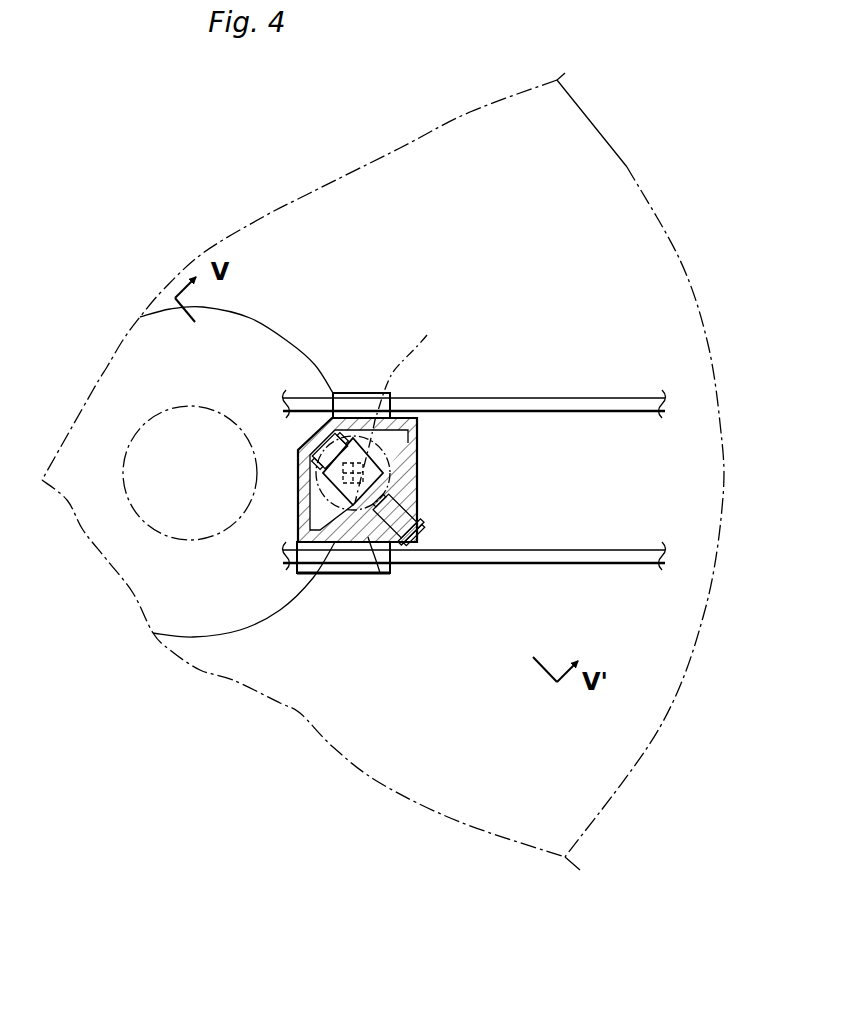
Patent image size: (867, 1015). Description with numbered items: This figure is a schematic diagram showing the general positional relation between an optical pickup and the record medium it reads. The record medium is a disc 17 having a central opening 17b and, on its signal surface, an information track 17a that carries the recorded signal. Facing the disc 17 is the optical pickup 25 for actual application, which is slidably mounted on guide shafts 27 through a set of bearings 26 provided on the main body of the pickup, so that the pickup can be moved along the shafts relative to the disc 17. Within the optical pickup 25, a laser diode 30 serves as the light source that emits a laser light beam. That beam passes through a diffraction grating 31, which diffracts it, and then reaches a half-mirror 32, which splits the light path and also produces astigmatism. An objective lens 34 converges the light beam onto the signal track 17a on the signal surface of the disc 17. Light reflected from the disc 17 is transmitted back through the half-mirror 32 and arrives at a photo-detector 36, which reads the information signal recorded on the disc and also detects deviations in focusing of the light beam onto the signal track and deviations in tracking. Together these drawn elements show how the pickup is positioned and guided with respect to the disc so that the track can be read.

The disc 17 is at (597, 185).
The information track 17a is at (215, 637).
The central opening 17b is at (128, 503).
The optical pickup 25 is at (408, 478).
The bearings 26 is at (350, 392).
The guide shafts 27 is at (507, 405).
The laser diode 30 is at (414, 511).
The diffraction grating 31 is at (380, 573).
The half-mirror 32 is at (312, 486).
The objective lens 34 is at (427, 335).
The photo-detector 36 is at (395, 437).